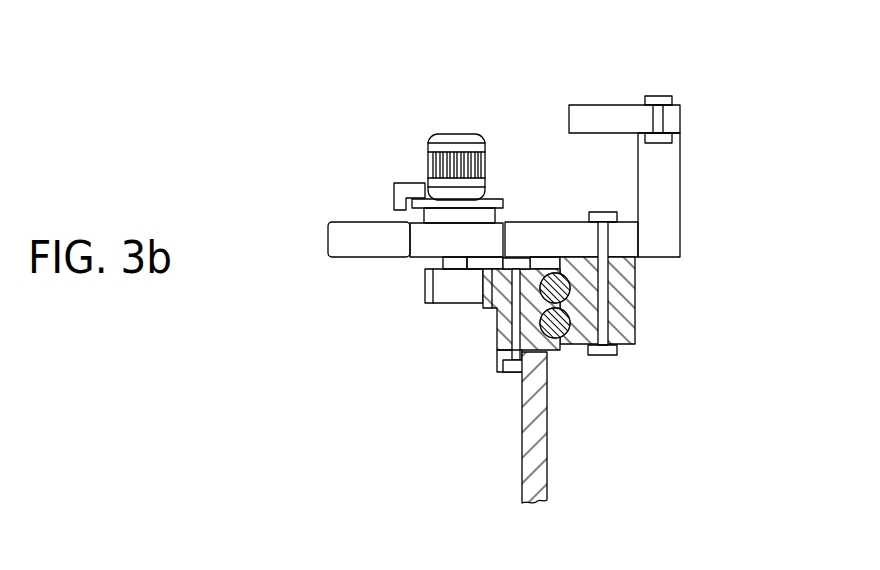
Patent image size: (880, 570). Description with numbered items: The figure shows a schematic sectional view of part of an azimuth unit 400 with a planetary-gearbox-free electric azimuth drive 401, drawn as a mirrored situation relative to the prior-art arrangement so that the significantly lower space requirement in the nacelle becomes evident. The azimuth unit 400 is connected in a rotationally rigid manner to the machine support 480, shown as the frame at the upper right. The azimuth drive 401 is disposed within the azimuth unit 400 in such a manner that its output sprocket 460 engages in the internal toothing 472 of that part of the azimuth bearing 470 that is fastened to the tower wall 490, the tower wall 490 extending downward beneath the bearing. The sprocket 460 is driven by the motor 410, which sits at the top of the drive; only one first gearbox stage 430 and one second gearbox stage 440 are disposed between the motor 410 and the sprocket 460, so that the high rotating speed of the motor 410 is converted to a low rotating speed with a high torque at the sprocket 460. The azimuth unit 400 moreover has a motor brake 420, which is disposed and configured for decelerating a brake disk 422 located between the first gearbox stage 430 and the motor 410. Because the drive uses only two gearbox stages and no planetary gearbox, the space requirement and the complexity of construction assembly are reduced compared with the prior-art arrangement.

The azimuth unit 400 is at (424, 450).
The azimuth drive 401 is at (357, 132).
The motor 410 is at (428, 165).
The brake 420 is at (402, 192).
The brake disk 422 is at (498, 200).
The first gearbox stage 430 is at (432, 214).
The second gearbox stage 440 is at (417, 232).
The output sprocket 460 is at (443, 292).
The azimuth bearing 470 is at (627, 320).
The toothing 472 is at (483, 292).
The machine support 480 is at (595, 112).
The tower wall 490 is at (538, 437).